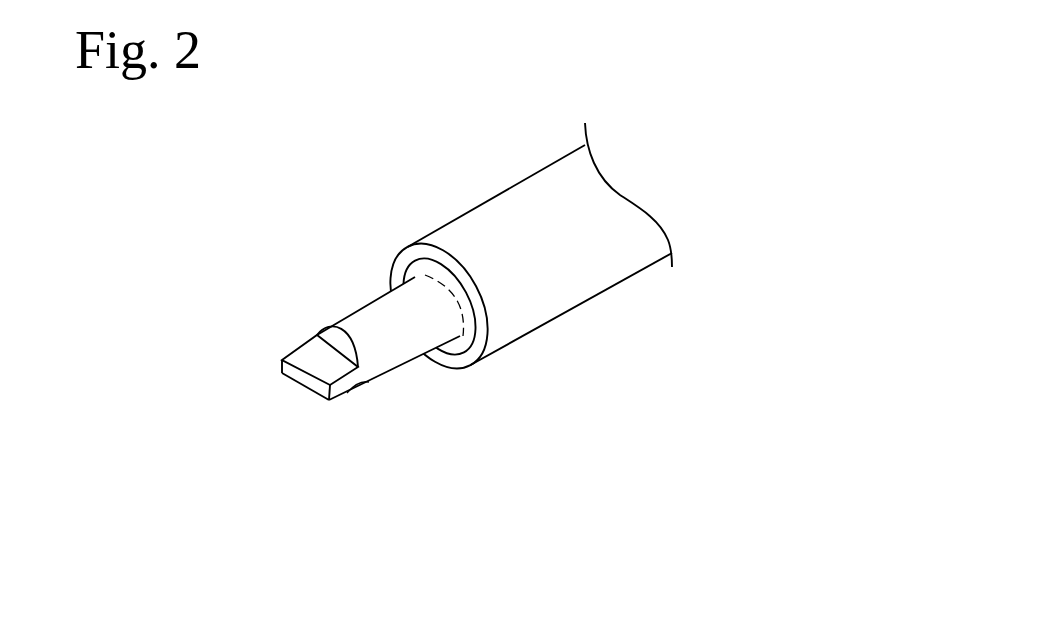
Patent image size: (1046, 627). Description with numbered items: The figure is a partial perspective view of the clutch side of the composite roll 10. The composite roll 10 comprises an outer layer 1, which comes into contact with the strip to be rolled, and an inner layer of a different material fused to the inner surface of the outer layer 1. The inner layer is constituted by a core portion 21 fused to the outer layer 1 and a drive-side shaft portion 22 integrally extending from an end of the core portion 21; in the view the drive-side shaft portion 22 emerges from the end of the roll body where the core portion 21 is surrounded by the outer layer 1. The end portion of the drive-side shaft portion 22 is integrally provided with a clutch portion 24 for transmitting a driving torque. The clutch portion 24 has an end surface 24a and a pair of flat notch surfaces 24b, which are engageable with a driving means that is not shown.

The outer layer 1 is at (541, 186).
The composite roll 10 is at (445, 183).
The core portion 21 is at (471, 366).
The drive-side shaft portion 22 is at (372, 315).
The clutch portion 24 is at (323, 402).
The end surface 24a is at (307, 380).
The flat notch surface 24b is at (309, 358).